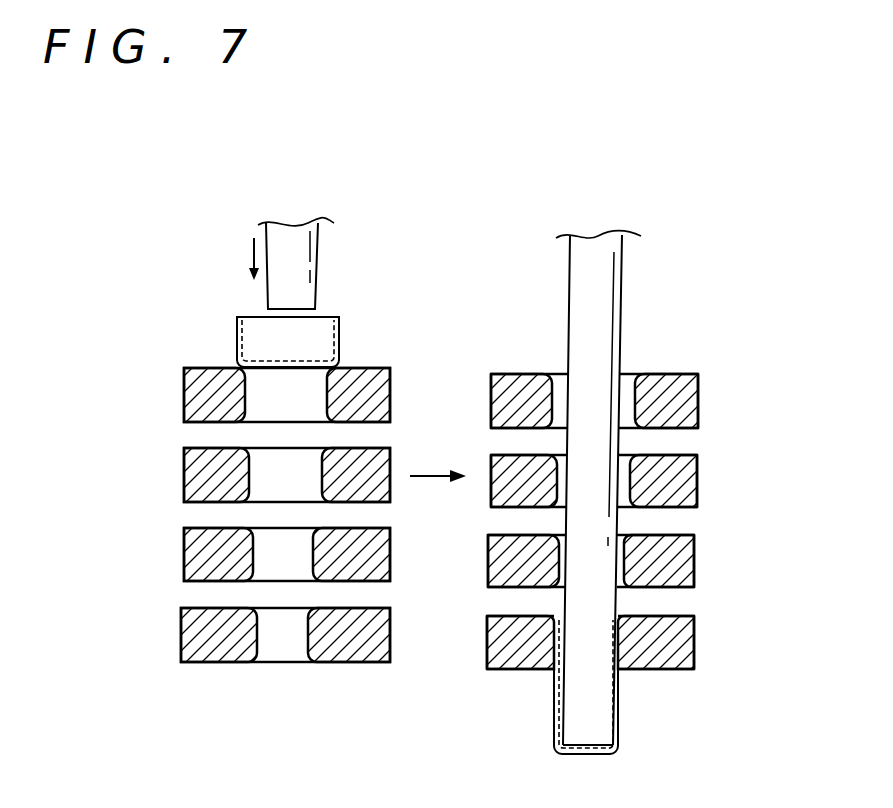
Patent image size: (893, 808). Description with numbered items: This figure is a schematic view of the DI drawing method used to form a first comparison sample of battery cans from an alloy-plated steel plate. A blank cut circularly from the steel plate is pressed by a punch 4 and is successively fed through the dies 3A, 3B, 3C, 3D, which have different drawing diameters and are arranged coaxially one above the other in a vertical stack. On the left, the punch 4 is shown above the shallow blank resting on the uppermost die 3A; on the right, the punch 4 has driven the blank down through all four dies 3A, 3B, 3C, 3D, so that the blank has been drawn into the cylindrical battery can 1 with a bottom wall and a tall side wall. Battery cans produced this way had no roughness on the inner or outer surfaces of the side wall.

The punch 4 is at (320, 269).
The battery can 1 is at (340, 337).
The die 3A is at (184, 393).
The die 3B is at (184, 468).
The die 3C is at (184, 550).
The die 3D is at (181, 633).